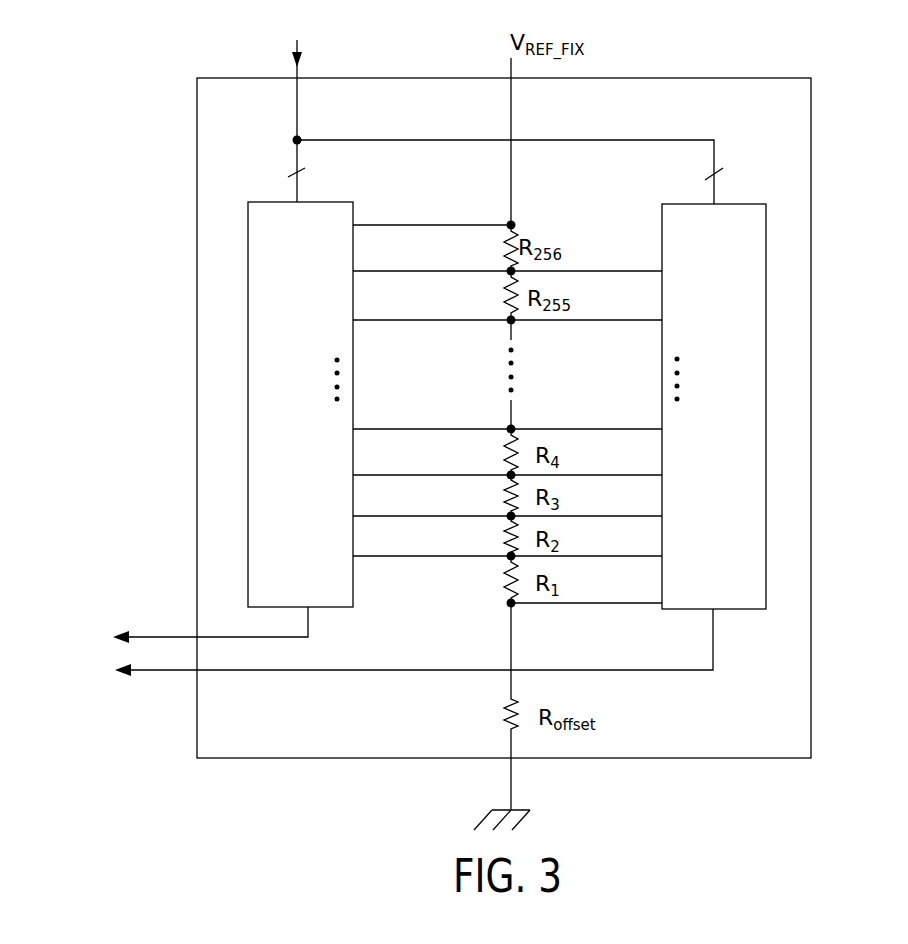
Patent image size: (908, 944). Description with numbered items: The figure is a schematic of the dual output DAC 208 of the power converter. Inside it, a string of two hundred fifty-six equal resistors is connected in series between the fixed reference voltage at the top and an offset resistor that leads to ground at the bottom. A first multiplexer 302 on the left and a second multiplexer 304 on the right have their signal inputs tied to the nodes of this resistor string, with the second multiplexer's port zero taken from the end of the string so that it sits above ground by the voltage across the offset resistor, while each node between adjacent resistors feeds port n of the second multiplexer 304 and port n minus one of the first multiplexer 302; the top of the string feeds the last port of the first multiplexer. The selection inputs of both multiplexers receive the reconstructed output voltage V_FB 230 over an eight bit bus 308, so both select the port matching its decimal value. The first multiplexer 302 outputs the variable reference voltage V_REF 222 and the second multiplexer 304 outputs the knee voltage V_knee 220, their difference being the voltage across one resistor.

The dual output DAC 208 is at (814, 660).
The reconstructed output voltage V_FB 230 is at (295, 70).
The 8-bit digital control bus 308 is at (590, 138).
The first multiplexer 302 is at (298, 431).
The second multiplexer 304 is at (757, 431).
The variable reference voltage V_REF 222 is at (160, 637).
The knee voltage V_knee 220 is at (148, 672).